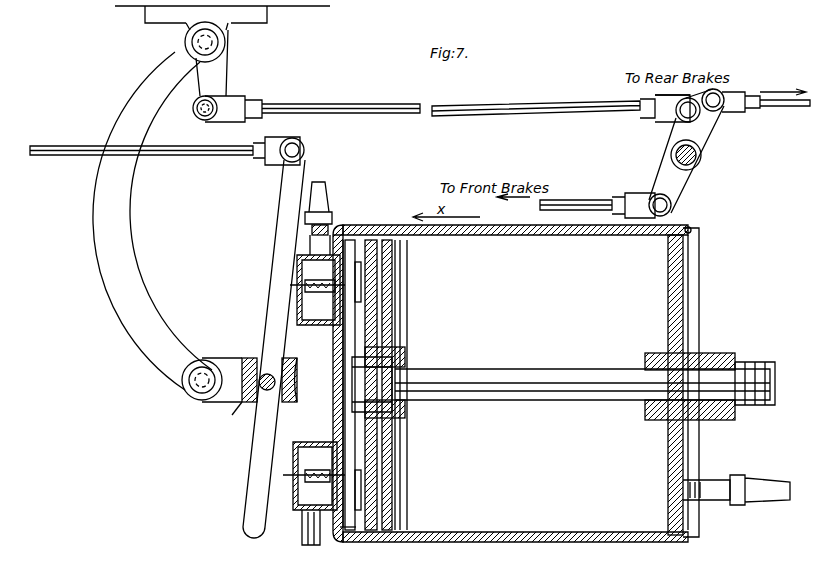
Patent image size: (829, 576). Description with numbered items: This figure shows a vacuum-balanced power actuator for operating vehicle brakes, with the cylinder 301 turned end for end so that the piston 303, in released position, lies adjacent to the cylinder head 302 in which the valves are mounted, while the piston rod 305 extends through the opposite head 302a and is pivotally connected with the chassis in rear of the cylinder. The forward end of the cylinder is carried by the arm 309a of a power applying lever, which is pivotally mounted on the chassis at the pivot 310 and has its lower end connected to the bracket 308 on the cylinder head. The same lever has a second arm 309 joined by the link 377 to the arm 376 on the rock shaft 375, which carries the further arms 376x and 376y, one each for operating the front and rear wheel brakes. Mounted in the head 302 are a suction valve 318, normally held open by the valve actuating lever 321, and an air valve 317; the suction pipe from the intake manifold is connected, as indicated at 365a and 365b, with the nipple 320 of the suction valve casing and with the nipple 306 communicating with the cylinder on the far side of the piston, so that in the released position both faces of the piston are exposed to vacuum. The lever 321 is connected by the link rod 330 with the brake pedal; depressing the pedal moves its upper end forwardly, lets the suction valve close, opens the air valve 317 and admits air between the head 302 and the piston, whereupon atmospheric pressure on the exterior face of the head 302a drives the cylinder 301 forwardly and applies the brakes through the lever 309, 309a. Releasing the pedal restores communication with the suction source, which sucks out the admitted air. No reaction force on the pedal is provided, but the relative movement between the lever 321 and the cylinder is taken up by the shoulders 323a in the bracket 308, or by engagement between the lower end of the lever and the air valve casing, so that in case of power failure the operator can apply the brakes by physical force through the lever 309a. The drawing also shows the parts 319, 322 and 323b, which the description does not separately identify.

The cylinder 301 is at (512, 235).
The cylinder head 302 is at (333, 420).
The cylinder head 302a is at (685, 312).
The piston 303 is at (377, 328).
The piston rod 305 is at (565, 370).
The nipple 306 is at (705, 483).
The bracket 308 is at (222, 362).
The arm 309 is at (228, 72).
The arm 309a is at (110, 283).
The pivot 310 is at (212, 42).
The air valve 317 is at (348, 540).
The suction valve 318 is at (355, 250).
The outlet 319 is at (300, 535).
The nipple 320 is at (326, 233).
The valve actuating lever 321 is at (278, 218).
The pin 322 is at (256, 395).
The shoulders 323a is at (249, 357).
The bearing surface 323b is at (292, 365).
The link rod 330 is at (72, 148).
The suction pipe connection 365a is at (318, 192).
The suction pipe connection 365b is at (760, 490).
The rock shaft 375 is at (698, 160).
The arm 376 is at (672, 126).
The arm 376x is at (660, 182).
The arm 376y is at (710, 118).
The link 377 is at (535, 104).